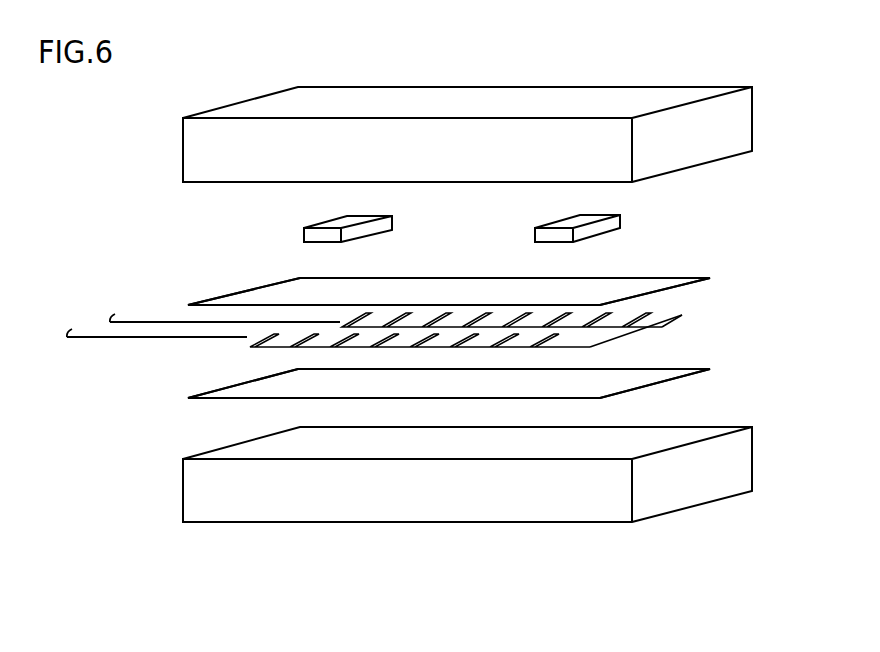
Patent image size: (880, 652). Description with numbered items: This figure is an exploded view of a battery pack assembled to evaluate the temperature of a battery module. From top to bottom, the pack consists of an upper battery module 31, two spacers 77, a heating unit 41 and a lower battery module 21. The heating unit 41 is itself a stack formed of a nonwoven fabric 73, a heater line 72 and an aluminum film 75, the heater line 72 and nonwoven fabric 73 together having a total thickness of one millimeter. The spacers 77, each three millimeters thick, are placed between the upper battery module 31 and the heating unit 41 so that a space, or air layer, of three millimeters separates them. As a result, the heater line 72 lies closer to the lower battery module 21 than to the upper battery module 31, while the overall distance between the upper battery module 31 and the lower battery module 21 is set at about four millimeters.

The upper battery module 31 is at (735, 123).
The spacers 77 is at (613, 227).
The heating unit 41 is at (188, 290).
The nonwoven fabric 73 is at (673, 288).
The heater line 72 is at (657, 327).
The aluminum film 75 is at (673, 380).
The lower battery module 21 is at (735, 463).